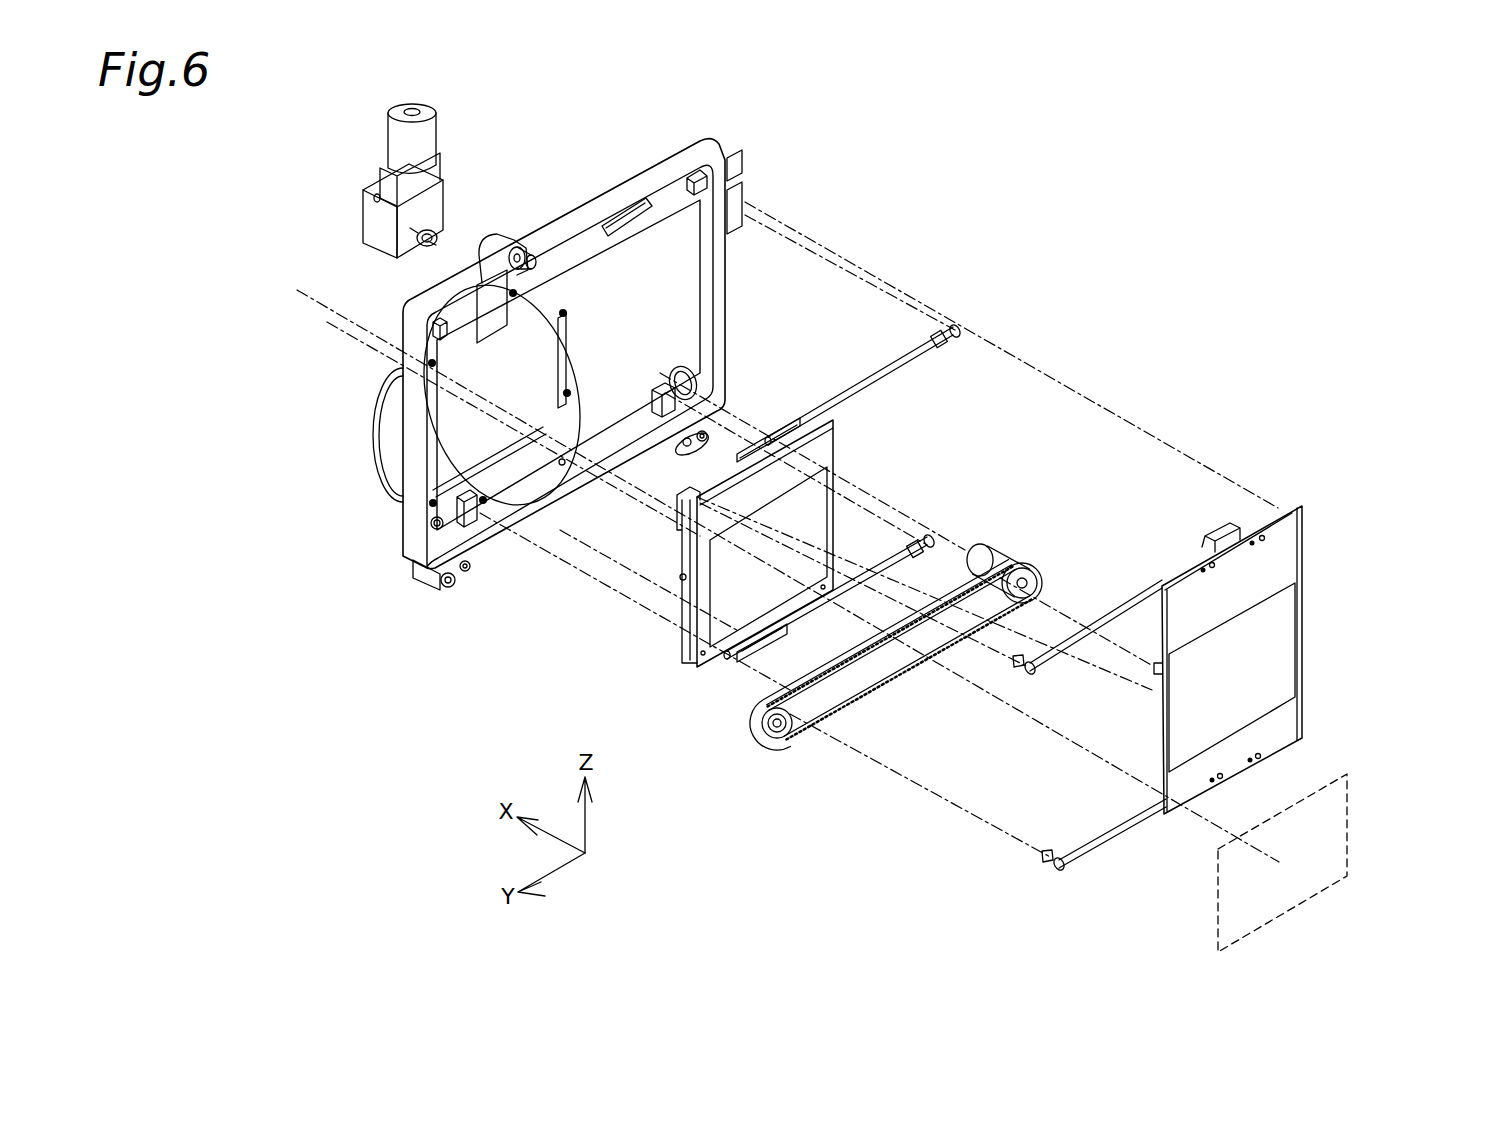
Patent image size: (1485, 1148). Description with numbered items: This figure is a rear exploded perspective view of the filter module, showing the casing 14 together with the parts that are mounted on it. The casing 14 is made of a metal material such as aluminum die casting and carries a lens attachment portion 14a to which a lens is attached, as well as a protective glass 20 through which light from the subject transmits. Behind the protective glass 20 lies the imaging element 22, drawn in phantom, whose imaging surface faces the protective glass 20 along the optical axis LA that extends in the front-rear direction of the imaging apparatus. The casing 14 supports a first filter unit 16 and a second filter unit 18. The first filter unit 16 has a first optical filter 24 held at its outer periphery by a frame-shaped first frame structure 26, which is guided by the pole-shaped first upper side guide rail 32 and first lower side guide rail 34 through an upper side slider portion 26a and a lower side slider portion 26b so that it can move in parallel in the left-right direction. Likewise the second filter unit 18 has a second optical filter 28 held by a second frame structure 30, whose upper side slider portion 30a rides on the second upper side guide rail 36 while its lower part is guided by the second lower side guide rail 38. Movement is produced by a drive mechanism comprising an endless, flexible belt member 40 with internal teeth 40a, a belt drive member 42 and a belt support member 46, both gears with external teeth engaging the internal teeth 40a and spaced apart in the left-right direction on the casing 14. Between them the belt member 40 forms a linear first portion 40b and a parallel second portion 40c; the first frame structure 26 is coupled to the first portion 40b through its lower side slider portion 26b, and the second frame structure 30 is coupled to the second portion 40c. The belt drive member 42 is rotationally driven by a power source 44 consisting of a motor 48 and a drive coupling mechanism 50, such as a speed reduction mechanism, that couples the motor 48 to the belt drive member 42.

The casing 14 is at (605, 195).
The lens attachment portion 14a is at (380, 438).
The first filter unit 16 is at (792, 531).
The second filter unit 18 is at (1284, 654).
The protective glass 20 is at (468, 416).
The imaging element 22 is at (1349, 818).
The first optical filter 24 is at (732, 567).
The first frame structure 26 is at (687, 555).
The upper side slider portion 26a is at (767, 435).
The lower side slider portion 26b is at (760, 640).
The second optical filter 28 is at (1285, 632).
The second frame structure 30 is at (1298, 527).
The upper side slider portion 30a is at (1223, 540).
The first upper side guide rail 32 is at (870, 383).
The first lower side guide rail 34 is at (897, 560).
The second upper side guide rail 36 is at (1110, 613).
The second lower side guide rail 38 is at (1110, 831).
The belt member 40 is at (895, 660).
The internal teeth 40a is at (845, 710).
The first portion 40b is at (847, 660).
The second portion 40c is at (897, 673).
The belt drive member 42 is at (1030, 598).
The power source 44 is at (392, 169).
The belt support member 46 is at (788, 737).
The motor 48 is at (432, 145).
The drive coupling mechanism 50 is at (387, 240).
The optical axis LA is at (333, 313).